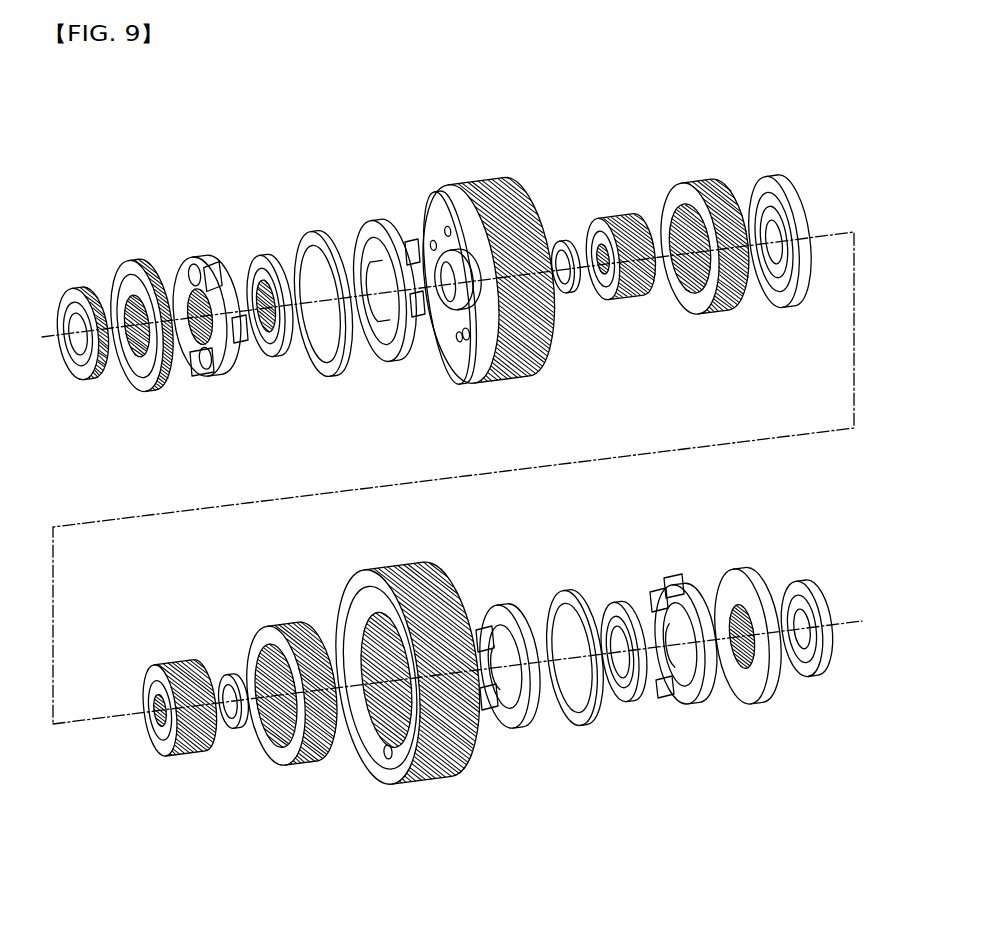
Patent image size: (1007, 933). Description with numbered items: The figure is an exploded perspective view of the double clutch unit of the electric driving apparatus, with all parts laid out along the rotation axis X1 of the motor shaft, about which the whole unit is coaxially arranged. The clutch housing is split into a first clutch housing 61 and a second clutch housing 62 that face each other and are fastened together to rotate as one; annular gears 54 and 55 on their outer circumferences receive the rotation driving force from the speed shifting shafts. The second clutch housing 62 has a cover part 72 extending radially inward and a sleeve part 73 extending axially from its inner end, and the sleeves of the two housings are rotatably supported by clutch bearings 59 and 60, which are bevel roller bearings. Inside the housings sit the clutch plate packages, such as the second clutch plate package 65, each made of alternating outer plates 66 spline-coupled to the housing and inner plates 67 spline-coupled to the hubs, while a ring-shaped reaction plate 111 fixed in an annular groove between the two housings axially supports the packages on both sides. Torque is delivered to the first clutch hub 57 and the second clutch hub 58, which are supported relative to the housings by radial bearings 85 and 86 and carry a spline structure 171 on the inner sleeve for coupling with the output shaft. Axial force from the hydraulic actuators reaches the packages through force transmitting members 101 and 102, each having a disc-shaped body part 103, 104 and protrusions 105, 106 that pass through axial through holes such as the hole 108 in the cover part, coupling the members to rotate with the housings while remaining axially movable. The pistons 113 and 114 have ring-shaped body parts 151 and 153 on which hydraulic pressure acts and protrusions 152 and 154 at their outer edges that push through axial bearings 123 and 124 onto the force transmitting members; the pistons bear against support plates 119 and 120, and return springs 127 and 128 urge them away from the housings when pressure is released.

The clutch bearing 60 is at (91, 298).
The support plate 120 is at (130, 262).
The piston 114 is at (200, 256).
The ring-shaped body part 153 is at (208, 372).
The protrusion 154 is at (244, 334).
The return spring 128 is at (262, 256).
The axial bearing 124 is at (312, 231).
The force transmitting member 102 is at (388, 221).
The body part 104 is at (402, 355).
The protrusion 106 is at (416, 320).
The sleeve part 73 is at (436, 252).
The cover part 72 is at (442, 208).
The second clutch housing 62 is at (452, 180).
The annular gear 55 is at (494, 182).
The axial through hole 108 is at (467, 341).
The radial bearing 86 is at (562, 241).
The second clutch hub 58 is at (613, 205).
The second clutch plate package 65 is at (696, 168).
The outer plate 66 is at (727, 312).
The inner plate 67 is at (690, 296).
The reaction plate 111 is at (770, 180).
The rotation axis X1 is at (845, 618).
The first clutch hub 57 is at (187, 766).
The radial bearing 85 is at (240, 733).
The first clutch housing 61 is at (419, 797).
The annular gear 54 is at (448, 774).
The spline structure 171 is at (372, 724).
The body part 103 is at (504, 598).
The force transmitting member 101 is at (537, 727).
The protrusion 105 is at (476, 632).
The axial bearing 123 is at (583, 718).
The return spring 127 is at (630, 698).
The piston 113 is at (705, 700).
The ring-shaped body part 151 is at (648, 600).
The protrusion 152 is at (668, 580).
The support plate 119 is at (770, 694).
The clutch bearing 59 is at (810, 580).